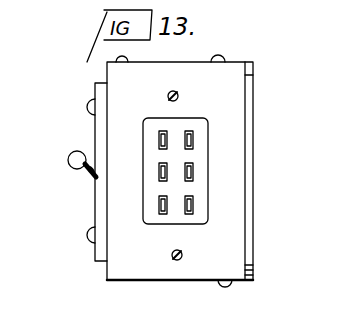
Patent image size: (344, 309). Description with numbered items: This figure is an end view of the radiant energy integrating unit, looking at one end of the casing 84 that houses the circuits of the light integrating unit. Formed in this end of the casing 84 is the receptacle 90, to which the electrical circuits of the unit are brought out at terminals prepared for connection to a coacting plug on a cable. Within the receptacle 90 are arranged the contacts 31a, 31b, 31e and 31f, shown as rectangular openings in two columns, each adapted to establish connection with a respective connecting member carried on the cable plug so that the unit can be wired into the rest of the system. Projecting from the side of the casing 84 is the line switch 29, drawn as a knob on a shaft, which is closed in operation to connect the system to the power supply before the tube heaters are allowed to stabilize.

The casing 84 is at (182, 77).
The receptacle 90 is at (197, 118).
The line switch 29 is at (87, 170).
The contact 31a is at (160, 135).
The contact 31b is at (193, 137).
The contact 31e is at (162, 210).
The contact 31f is at (193, 207).